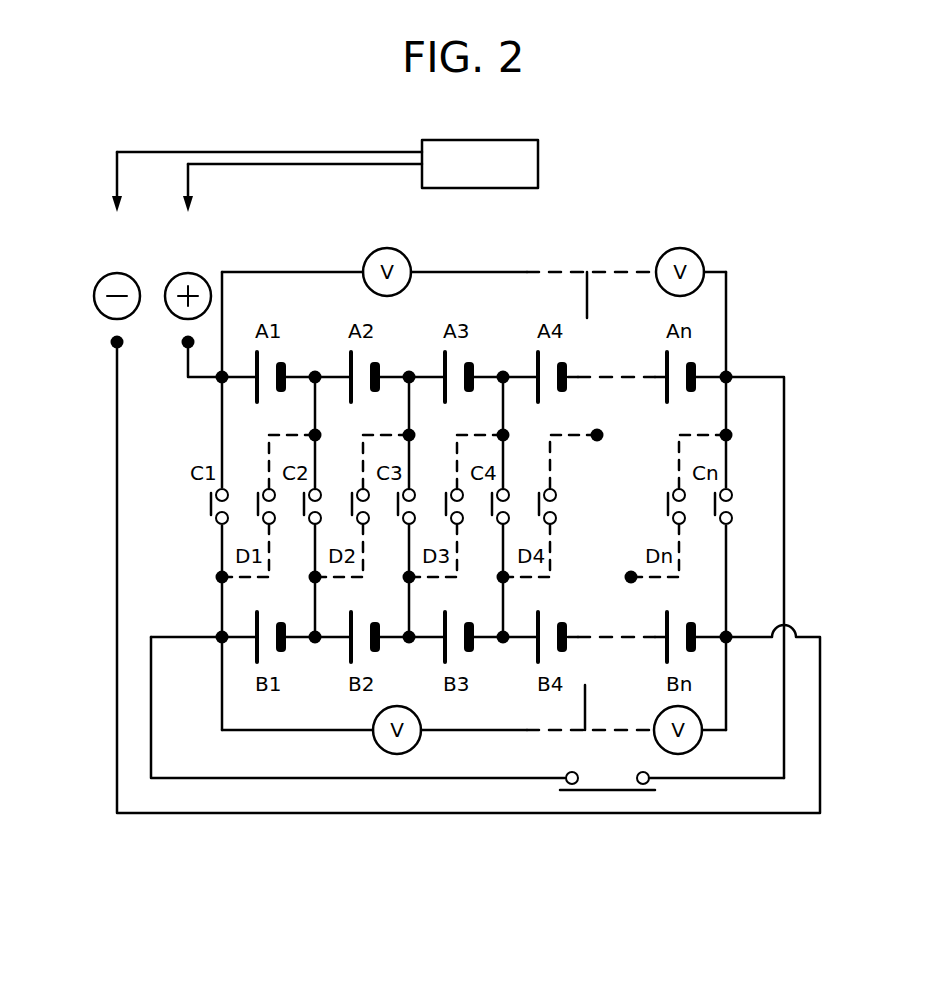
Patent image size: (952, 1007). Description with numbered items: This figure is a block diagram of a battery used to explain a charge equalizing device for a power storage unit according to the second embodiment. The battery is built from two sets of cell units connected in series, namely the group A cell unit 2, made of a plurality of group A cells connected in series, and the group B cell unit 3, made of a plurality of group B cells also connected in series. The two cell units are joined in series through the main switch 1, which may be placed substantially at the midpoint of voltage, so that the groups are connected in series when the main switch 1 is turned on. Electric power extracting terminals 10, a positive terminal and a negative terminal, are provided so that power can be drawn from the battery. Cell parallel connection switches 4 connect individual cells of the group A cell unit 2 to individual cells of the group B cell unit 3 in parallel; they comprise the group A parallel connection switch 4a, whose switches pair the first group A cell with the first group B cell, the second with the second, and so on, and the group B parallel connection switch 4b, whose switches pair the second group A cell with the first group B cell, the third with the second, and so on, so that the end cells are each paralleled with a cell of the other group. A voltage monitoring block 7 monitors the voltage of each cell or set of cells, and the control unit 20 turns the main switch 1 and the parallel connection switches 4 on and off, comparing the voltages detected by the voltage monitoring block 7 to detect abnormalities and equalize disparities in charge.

The main switch 1 is at (594, 790).
The group A cell unit 2 is at (702, 353).
The group B cell unit 3 is at (688, 608).
The cell parallel connection switches 4 is at (655, 518).
The group A parallel connection switch 4a is at (212, 508).
The group B parallel connection switch 4b is at (258, 510).
The voltage monitoring block 7 is at (480, 272).
The electric power extracting terminals 10 is at (212, 260).
The control unit 20 is at (538, 152).